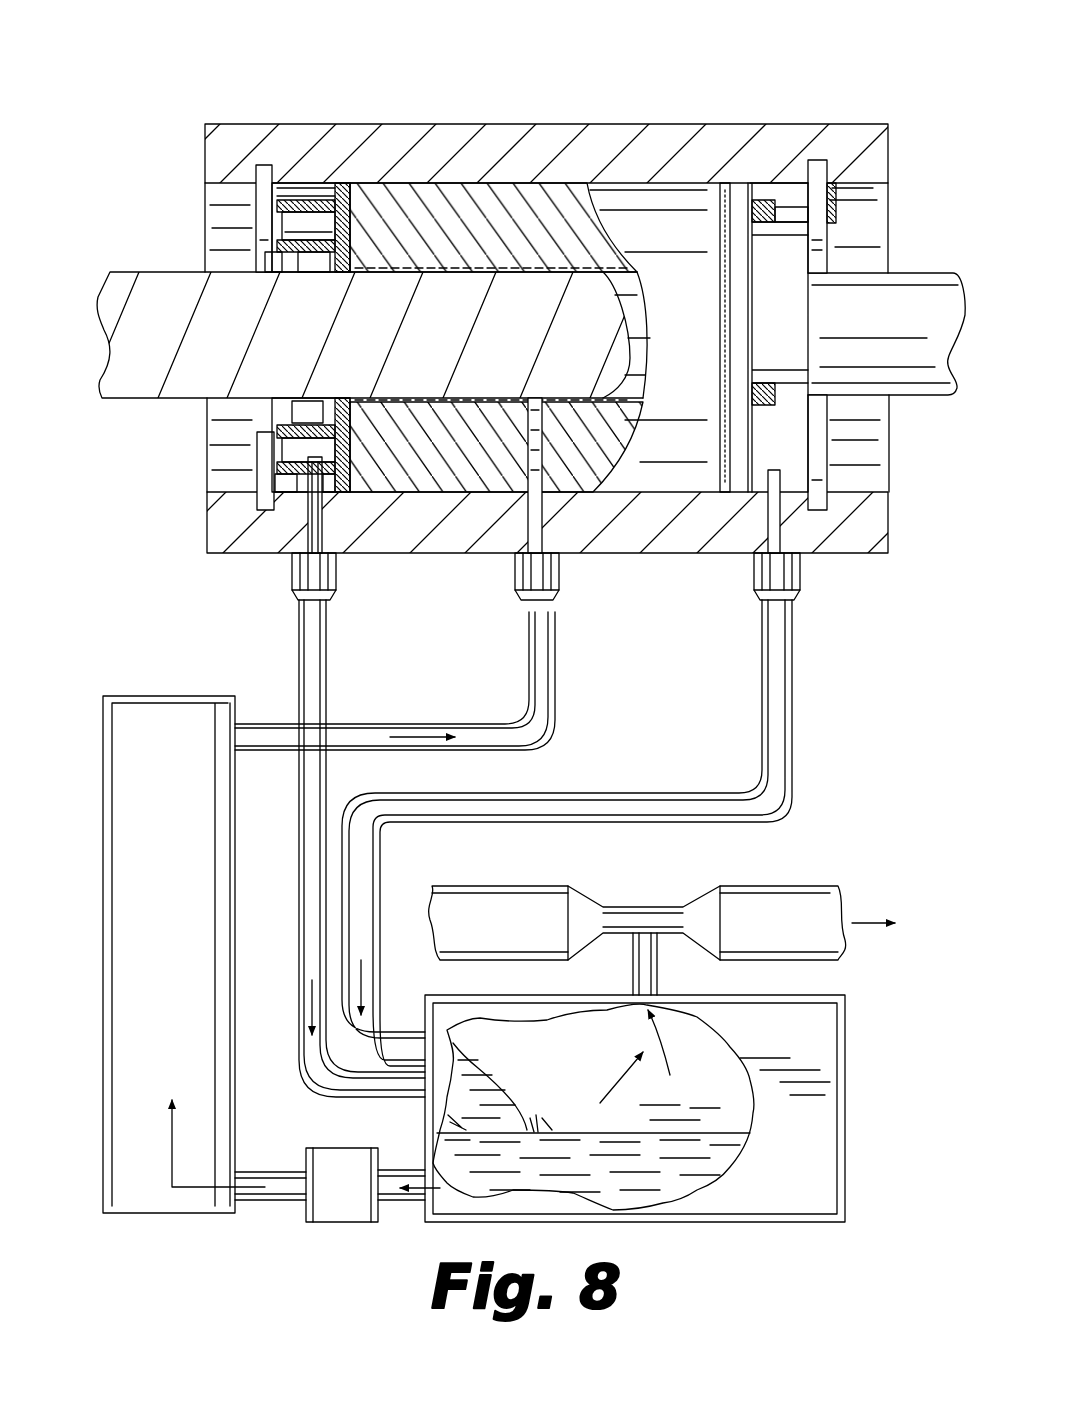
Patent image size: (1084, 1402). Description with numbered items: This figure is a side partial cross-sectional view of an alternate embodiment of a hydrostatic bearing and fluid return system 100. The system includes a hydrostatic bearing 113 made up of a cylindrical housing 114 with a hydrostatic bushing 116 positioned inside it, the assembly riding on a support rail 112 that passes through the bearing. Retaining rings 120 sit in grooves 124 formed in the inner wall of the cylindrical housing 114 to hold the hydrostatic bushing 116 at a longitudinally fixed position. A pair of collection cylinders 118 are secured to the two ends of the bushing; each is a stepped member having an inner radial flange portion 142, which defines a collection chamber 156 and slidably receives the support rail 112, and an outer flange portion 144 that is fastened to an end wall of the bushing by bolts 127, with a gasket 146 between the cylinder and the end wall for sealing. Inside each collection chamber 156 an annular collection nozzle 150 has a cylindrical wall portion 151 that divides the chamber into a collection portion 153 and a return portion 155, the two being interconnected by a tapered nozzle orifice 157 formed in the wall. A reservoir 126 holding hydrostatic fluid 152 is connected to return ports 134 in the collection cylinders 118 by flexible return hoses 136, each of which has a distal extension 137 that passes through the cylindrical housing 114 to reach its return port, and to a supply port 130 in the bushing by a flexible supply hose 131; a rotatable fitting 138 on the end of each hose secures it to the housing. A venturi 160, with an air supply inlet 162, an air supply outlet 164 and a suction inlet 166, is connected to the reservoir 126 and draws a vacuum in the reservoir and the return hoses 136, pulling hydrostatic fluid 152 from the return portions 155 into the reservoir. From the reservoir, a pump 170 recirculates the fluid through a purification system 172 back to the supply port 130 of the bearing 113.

The hydrostatic bearing and fluid return system 100 is at (205, 95).
The support rail 112 is at (133, 385).
The hydrostatic bearing 113 is at (420, 124).
The cylindrical housing 114 is at (580, 180).
The hydrostatic bushing 116 is at (480, 210).
The collection cylinders 118 is at (310, 215).
The retaining rings 120 is at (263, 165).
The grooves 124 is at (290, 200).
The reservoir 126 is at (860, 1052).
The bolts 127 is at (760, 200).
The supply port 130 is at (545, 515).
The supply hose 131 is at (558, 665).
The return ports 134 is at (308, 500).
The return hoses 136 is at (327, 665).
The distal extension 137 is at (320, 525).
The rotatable fitting 138 is at (292, 580).
The inner radial flange portion 142 is at (258, 233).
The outer flange portion 144 is at (345, 200).
The gasket 146 is at (340, 260).
The annular collection nozzle 150 is at (280, 435).
The cylindrical wall portion 151 is at (345, 470).
The hydrostatic fluid 152 is at (663, 1190).
The collection portion 153 is at (277, 262).
The return portion 155 is at (280, 480).
The collection chamber 156 is at (257, 215).
The tapered nozzle orifice 157 is at (312, 262).
The venturi 160 is at (662, 919).
The air supply inlet 162 is at (475, 890).
The air supply outlet 164 is at (815, 888).
The suction inlet 166 is at (657, 970).
The pump 170 is at (345, 1205).
The purification system 172 is at (147, 696).